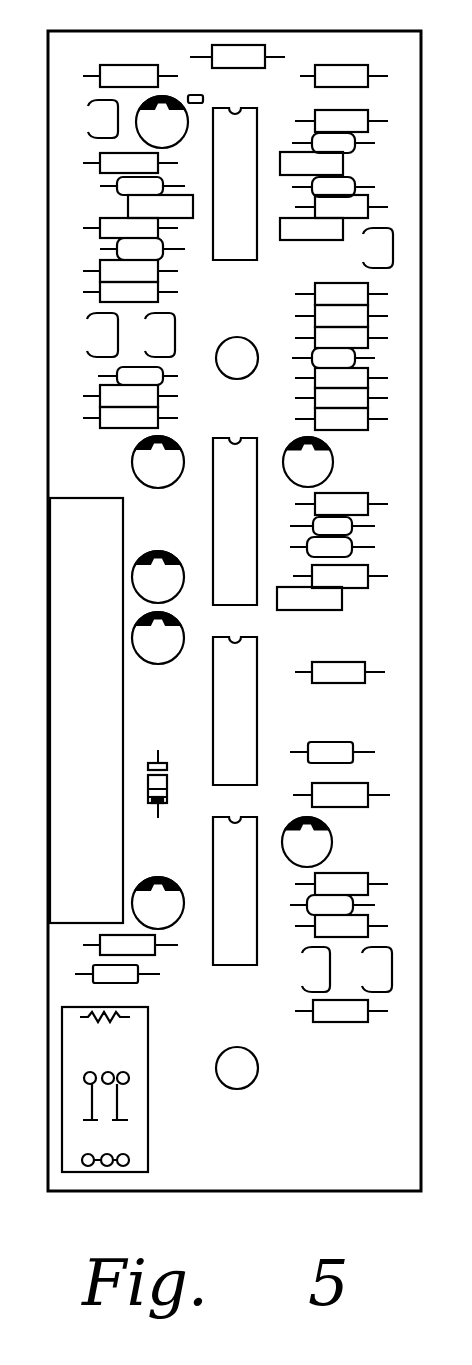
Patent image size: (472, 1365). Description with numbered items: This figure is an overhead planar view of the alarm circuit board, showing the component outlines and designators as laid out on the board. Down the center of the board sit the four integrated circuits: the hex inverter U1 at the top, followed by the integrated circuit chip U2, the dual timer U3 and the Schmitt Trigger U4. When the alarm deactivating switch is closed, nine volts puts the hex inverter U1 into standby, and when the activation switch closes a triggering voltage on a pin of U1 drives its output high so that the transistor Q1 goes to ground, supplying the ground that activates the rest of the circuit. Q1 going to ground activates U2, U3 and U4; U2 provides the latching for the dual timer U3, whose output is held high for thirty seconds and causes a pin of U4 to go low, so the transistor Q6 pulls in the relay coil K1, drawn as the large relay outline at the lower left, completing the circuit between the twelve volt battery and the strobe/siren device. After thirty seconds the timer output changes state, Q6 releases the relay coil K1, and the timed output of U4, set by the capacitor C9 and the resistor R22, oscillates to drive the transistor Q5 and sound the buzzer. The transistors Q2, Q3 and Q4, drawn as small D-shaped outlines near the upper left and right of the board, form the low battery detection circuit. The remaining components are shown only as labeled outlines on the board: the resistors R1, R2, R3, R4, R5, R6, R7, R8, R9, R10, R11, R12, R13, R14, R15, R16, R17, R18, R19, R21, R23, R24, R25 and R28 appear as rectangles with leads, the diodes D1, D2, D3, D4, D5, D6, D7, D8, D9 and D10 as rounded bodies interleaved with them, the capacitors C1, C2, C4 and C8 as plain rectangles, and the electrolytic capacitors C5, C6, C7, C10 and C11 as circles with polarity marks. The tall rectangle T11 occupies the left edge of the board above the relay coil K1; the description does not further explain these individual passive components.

The resistor R1 is at (130, 163).
The resistor R2 is at (130, 228).
The resistor R3 is at (341, 206).
The resistor R4 is at (341, 121).
The resistor R5 is at (130, 271).
The resistor R6 is at (341, 378).
The resistor R7 is at (341, 316).
The resistor R8 is at (130, 292).
The resistor R9 is at (341, 294).
The resistor R10 is at (344, 76).
The resistor R11 is at (130, 76).
The resistor R12 is at (237, 56).
The resistor R13 is at (341, 398).
The resistor R14 is at (341, 337).
The resistor R15 is at (130, 396).
The resistor R16 is at (130, 417).
The resistor R17 is at (341, 419).
The resistor R18 is at (341, 504).
The resistor R19 is at (340, 672).
The resistor R21 is at (130, 945).
The resistor R22 is at (341, 795).
The resistor R23 is at (341, 884).
The resistor R24 is at (341, 926).
The resistor R25 is at (341, 1011).
The resistor R28 is at (340, 576).
The diode D1 is at (130, 580).
The diode D2 is at (333, 143).
The diode D3 is at (333, 187).
The diode D4 is at (333, 358).
The diode D5 is at (142, 249).
The diode D6 is at (138, 376).
The diode D7 is at (332, 547).
The diode D8 is at (332, 526).
The diode D9 is at (332, 752).
The diode D10 is at (332, 905).
The capacitor C1 is at (311, 163).
The capacitor C2 is at (311, 229).
The capacitor C4 is at (160, 206).
The electrolytic capacitor C5 is at (158, 473).
The electrolytic capacitor C6 is at (320, 462).
The electrolytic capacitor C7 is at (158, 648).
The capacitor C8 is at (309, 598).
The capacitor C9 is at (320, 842).
The electrolytic capacitor C10 is at (158, 894).
The electrolytic capacitor C11 is at (158, 568).
The transistor Q1 is at (147, 335).
The transistor Q2 is at (86, 119).
The transistor Q3 is at (364, 248).
The transistor Q4 is at (88, 335).
The transistor Q5 is at (366, 969).
The transistor Q6 is at (301, 969).
The hex inverter U1 is at (235, 173).
The integrated circuit chip U2 is at (235, 511).
The dual timer U3 is at (235, 701).
The Schmitt Trigger U4 is at (235, 881).
The transformer T11 is at (86, 704).
The relay coil K1 is at (105, 1080).